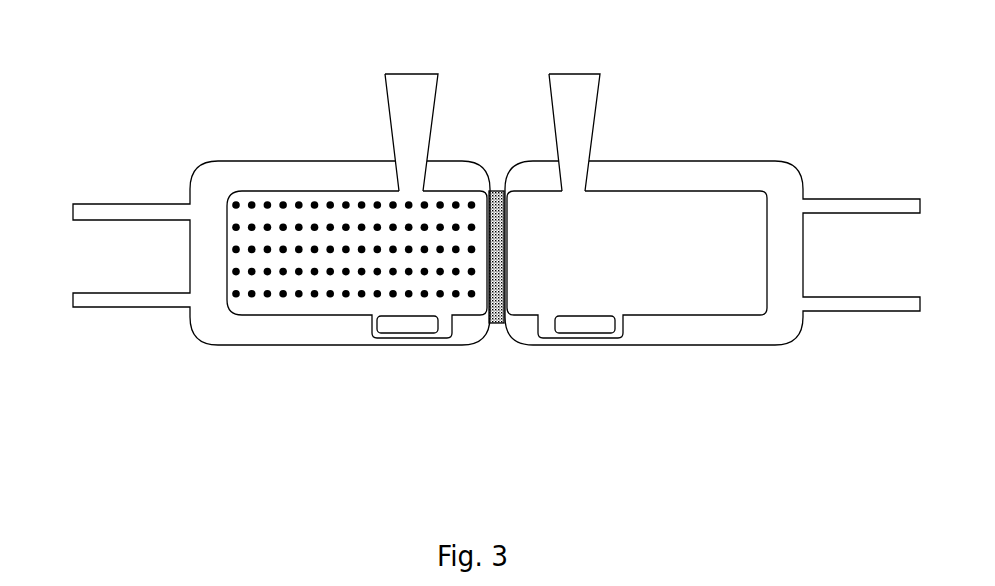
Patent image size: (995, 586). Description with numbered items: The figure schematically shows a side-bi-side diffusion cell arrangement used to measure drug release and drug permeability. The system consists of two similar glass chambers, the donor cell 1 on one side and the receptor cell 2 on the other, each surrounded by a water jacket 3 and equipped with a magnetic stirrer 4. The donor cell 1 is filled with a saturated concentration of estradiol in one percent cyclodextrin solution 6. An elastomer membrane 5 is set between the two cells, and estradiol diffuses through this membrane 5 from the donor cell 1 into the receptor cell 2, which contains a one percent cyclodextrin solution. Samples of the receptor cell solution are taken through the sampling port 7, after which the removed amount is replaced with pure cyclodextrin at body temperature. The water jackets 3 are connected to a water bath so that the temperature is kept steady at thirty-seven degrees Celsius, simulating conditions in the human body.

The donor cell 1 is at (197, 158).
The receptor cell 2 is at (766, 157).
The water jackets 3 is at (260, 343).
The magnetic stirrers 4 is at (612, 334).
The elastomer membrane 5 is at (496, 326).
The saturated estradiol solution in cyclodextrin 6 is at (323, 190).
The sampling port 7 is at (588, 72).